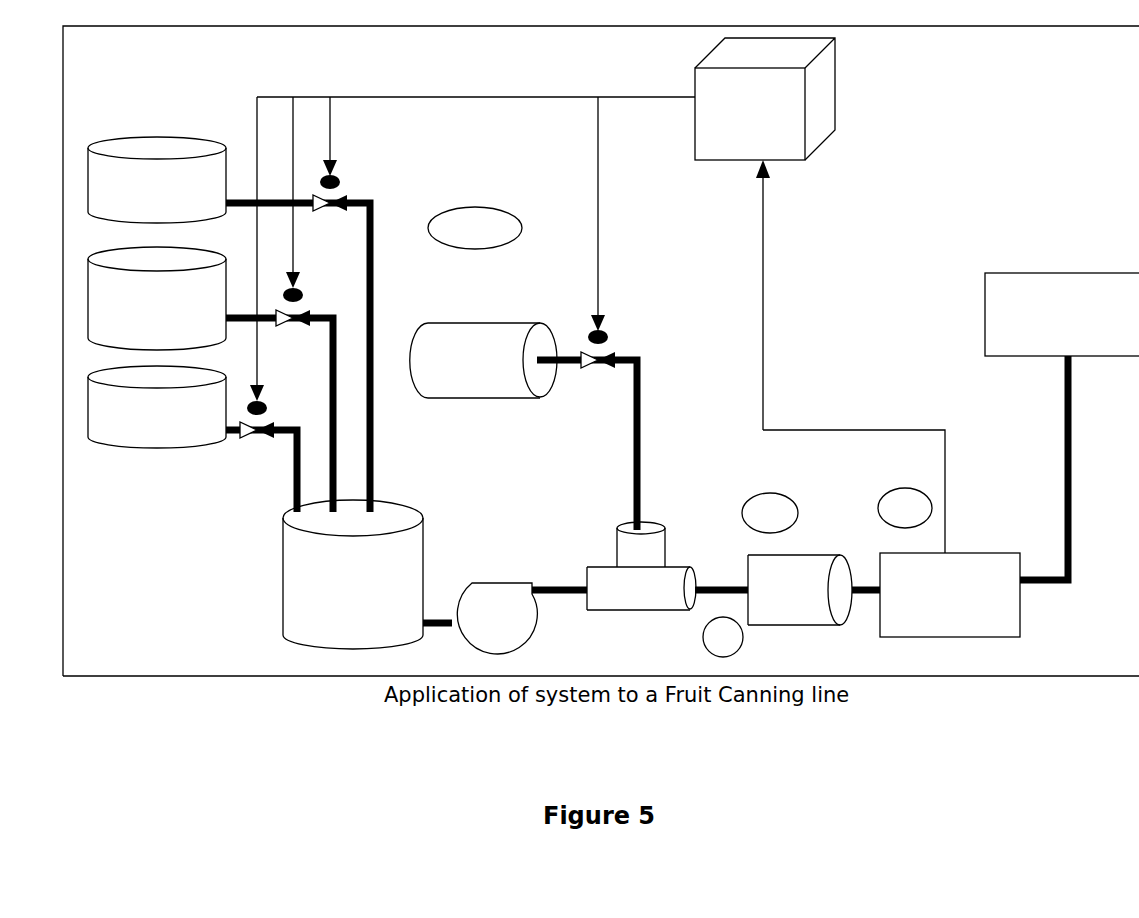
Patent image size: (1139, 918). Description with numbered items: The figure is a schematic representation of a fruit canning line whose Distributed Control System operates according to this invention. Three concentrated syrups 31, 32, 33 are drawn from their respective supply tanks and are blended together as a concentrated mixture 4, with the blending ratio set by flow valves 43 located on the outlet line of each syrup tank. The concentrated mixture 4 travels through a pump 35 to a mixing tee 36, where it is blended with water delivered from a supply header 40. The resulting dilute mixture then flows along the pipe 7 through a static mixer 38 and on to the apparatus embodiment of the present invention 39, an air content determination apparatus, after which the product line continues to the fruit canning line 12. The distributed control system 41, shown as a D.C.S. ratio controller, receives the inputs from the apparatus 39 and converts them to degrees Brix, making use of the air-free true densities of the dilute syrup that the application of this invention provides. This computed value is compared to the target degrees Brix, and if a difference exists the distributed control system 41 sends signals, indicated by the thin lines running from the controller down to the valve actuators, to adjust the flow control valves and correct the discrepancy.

The concentrated syrup 31 is at (229, 304).
The concentrated syrup 32 is at (210, 304).
The concentrated syrup 33 is at (192, 304).
The supply header 40 is at (523, 313).
The flow valves 43 is at (590, 330).
The distributed control system 41 is at (820, 295).
The concentrated mixture 4 is at (367, 574).
The pump 35 is at (522, 618).
The mixing tee 36 is at (667, 566).
The pipe 7 is at (730, 592).
The static mixer 38 is at (792, 556).
The apparatus embodiment of the present invention 39 is at (932, 554).
The fruit canning line 12 is at (1062, 314).